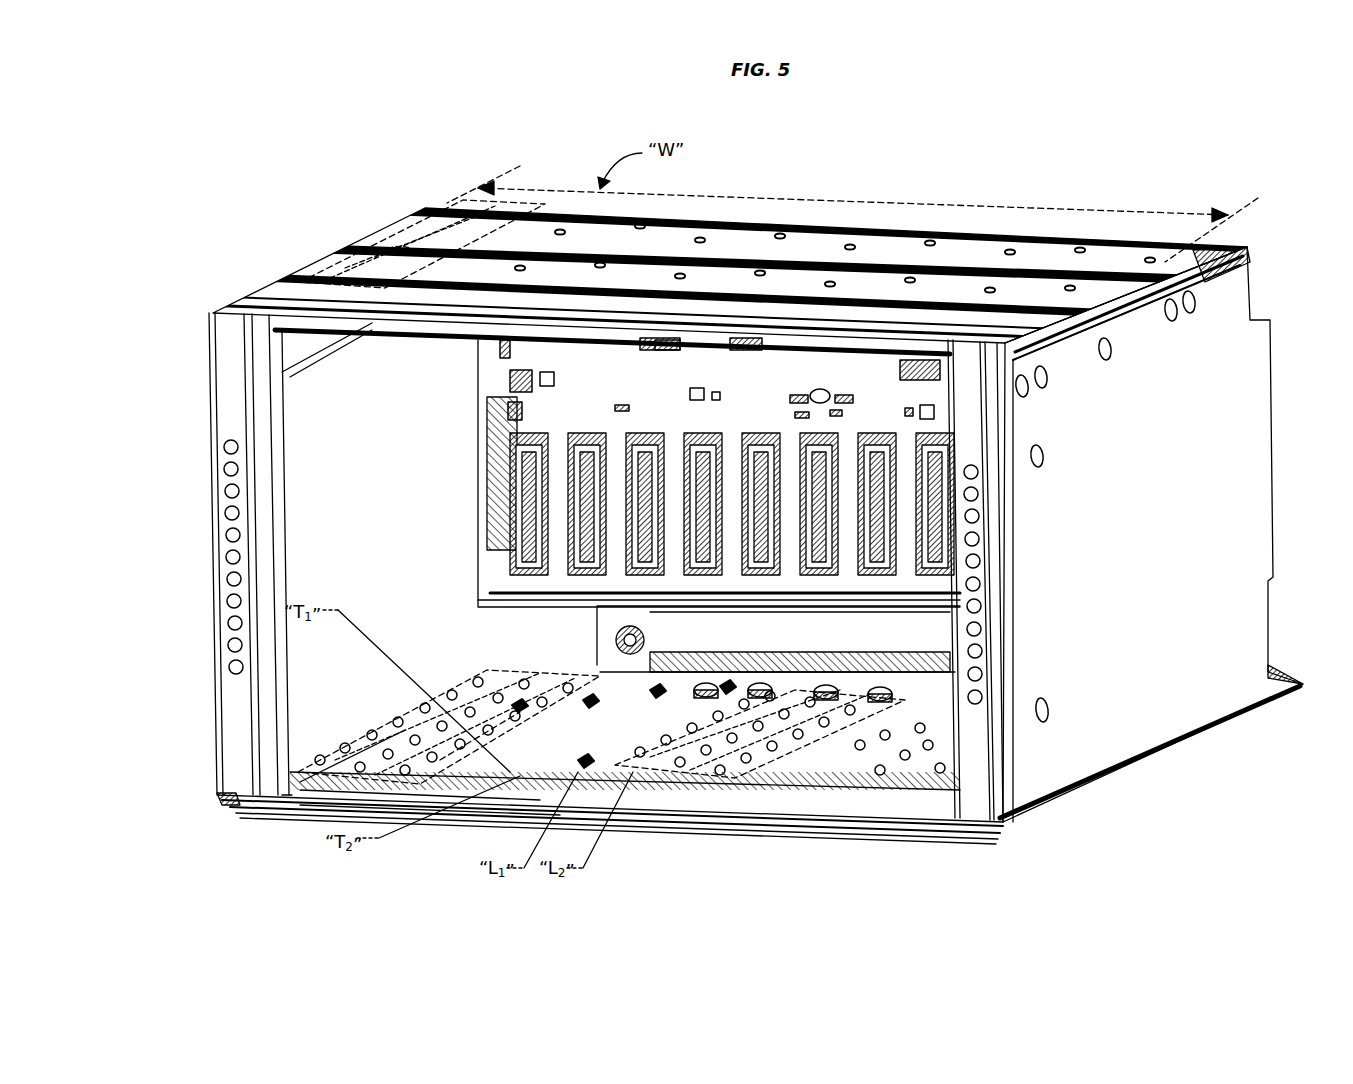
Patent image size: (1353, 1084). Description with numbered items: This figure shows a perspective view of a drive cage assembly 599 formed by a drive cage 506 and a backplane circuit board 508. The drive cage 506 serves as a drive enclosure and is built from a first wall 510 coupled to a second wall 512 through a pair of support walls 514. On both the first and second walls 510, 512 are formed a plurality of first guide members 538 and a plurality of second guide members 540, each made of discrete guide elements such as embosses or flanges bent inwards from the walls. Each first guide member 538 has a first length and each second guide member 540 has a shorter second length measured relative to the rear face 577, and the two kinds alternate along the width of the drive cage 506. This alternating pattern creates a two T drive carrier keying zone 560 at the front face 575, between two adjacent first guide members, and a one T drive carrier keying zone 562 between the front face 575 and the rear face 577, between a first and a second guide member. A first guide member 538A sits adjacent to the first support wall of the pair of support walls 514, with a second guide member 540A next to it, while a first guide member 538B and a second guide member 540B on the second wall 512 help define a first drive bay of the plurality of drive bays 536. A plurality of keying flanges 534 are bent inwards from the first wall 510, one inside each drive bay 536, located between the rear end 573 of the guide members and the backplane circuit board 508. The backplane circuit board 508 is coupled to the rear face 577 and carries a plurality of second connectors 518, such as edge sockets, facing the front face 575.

The drive cage assembly 599 is at (205, 124).
The drive cage 506 is at (392, 216).
The backplane circuit board 508 is at (662, 380).
The second wall 512 is at (1090, 250).
The support walls 514 is at (413, 502).
The second connectors 518 is at (640, 447).
The keying flanges 534 is at (658, 793).
The drive bays 536 is at (460, 740).
The first guide members 538 is at (760, 770).
The first guide member 538A is at (470, 768).
The first guide member 538B is at (301, 281).
The second guide members 540 is at (815, 765).
The second guide member 540A is at (594, 768).
The second guide member 540B is at (404, 262).
The first wall 510 is at (290, 793).
The 2 T drive carrier keying zone 560 is at (540, 772).
The 1 T drive carrier keying zone 562 is at (577, 697).
The rear end 573 is at (772, 700).
The front face 575 is at (548, 790).
The rear face 577 is at (792, 670).